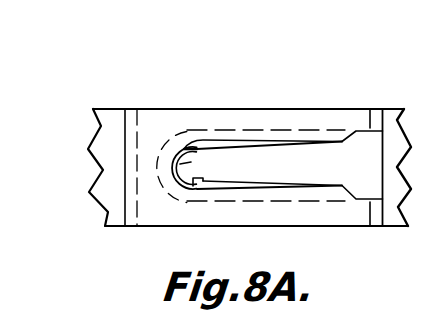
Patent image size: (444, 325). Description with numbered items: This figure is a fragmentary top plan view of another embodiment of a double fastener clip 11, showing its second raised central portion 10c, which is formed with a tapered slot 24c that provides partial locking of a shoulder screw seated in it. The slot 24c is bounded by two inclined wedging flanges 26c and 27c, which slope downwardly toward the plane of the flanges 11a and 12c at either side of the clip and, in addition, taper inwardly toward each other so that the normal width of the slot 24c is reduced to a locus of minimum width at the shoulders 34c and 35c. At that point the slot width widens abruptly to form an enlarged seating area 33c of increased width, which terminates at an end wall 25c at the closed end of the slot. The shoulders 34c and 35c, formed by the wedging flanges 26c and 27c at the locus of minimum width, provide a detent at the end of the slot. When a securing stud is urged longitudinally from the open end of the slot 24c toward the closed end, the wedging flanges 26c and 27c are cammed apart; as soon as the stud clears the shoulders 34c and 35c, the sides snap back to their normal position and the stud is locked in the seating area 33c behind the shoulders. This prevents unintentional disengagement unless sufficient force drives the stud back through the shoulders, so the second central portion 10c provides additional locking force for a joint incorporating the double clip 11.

The second raised central portion 10c is at (284, 85).
The double fastener clip 11 is at (260, 40).
The flange 11a is at (103, 109).
The flange 12c is at (392, 108).
The tapered slot 24c is at (328, 154).
The end wall 25c is at (172, 152).
The inclined wedging flange 26c is at (247, 147).
The inclined wedging flange 27c is at (257, 186).
The enlarged seating area 33c is at (181, 165).
The shoulder 34c is at (184, 149).
The shoulder 35c is at (190, 187).